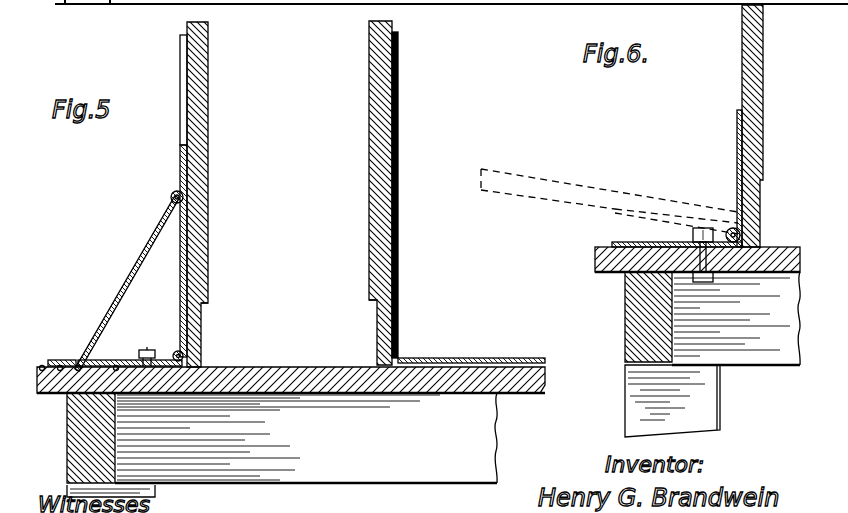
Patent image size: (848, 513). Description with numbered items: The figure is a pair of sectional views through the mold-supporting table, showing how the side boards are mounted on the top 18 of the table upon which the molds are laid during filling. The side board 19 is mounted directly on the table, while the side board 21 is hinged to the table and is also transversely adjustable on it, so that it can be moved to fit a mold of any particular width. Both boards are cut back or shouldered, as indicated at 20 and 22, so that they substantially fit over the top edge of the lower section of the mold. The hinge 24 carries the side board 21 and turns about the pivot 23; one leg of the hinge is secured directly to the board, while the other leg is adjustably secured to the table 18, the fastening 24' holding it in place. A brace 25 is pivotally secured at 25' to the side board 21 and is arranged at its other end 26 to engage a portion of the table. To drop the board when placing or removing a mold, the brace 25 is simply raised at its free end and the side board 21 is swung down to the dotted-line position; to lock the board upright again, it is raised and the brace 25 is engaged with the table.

In FIG. 5, the table top 18 is at (297, 388).
In FIG. 6, the table top 18 is at (615, 273).
In FIG. 5, the side board 19 is at (370, 178).
In FIG. 5, the shoulder 20 is at (376, 304).
In FIG. 5, the side board 21 is at (209, 190).
In FIG. 6, the side board 21 is at (765, 75).
In FIG. 5, the shoulder 22 is at (202, 306).
In FIG. 5, the pivot 23 is at (178, 350).
In FIG. 6, the pivot 23 is at (733, 235).
In FIG. 5, the hinge 24 is at (311, 199).
In FIG. 6, the hinge 24 is at (631, 184).
In FIG. 5, the fastening bolt 24' is at (144, 343).
In FIG. 6, the fastening bolt 24' is at (706, 227).
In FIG. 5, the brace 25 is at (127, 283).
In FIG. 5, the brace pivot 25' is at (149, 201).
In FIG. 5, the brace end 26 is at (74, 362).